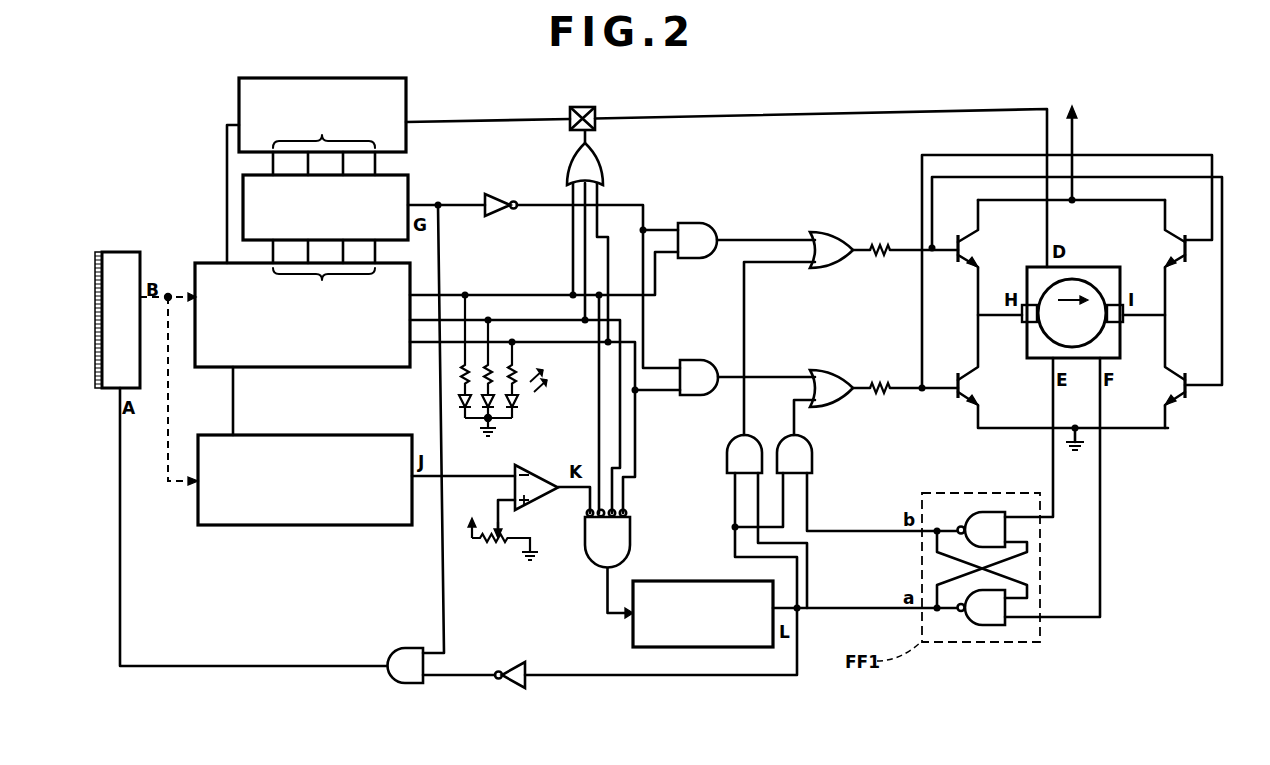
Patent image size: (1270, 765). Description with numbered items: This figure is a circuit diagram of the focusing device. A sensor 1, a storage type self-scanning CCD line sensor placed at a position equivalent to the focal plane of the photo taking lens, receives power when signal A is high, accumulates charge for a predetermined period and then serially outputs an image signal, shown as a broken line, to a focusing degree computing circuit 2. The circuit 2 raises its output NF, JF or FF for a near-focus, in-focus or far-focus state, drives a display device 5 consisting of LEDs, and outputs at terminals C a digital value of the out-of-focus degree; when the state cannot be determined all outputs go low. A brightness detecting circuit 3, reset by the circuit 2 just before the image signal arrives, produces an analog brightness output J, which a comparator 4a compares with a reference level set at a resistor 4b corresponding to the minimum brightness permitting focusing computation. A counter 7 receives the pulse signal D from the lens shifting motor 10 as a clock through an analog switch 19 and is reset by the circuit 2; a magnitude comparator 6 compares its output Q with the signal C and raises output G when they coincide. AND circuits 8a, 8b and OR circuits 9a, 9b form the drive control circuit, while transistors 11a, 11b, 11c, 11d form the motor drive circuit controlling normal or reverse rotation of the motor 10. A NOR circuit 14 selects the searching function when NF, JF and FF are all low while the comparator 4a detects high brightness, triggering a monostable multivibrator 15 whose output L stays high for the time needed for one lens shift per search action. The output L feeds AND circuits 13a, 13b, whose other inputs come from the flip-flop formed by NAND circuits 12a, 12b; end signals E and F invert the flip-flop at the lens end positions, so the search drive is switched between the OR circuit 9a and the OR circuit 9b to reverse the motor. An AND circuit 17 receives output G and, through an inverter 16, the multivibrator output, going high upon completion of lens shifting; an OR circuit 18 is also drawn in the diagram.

The sensor 1 is at (112, 252).
The focusing degree computing circuit 2 is at (302, 367).
The brightness detecting circuit 3 is at (343, 435).
The comparator 4a is at (536, 476).
The resistor 4b is at (500, 548).
The display device 5 is at (525, 370).
The magnitude comparator 6 is at (406, 172).
The counter 7 is at (406, 88).
The AND circuit 8a is at (688, 223).
The AND circuit 8b is at (690, 360).
The OR circuit 9a is at (826, 232).
The OR circuit 9b is at (826, 371).
The lens shifting motor 10 is at (1085, 265).
The transistor 11a is at (972, 243).
The transistor 11b is at (975, 385).
The transistor 11c is at (1185, 242).
The transistor 11d is at (1178, 384).
The NAND circuit 12a is at (983, 512).
The NAND circuit 12b is at (996, 625).
The AND circuit 13a is at (728, 440).
The AND circuit 13b is at (813, 442).
The NOR circuit 14 is at (632, 540).
The monostable multivibrator 15 is at (688, 581).
The inverter 16 is at (490, 194).
The AND circuit 17 is at (398, 648).
The OR gate 18 is at (605, 159).
The analog switch 19 is at (581, 107).